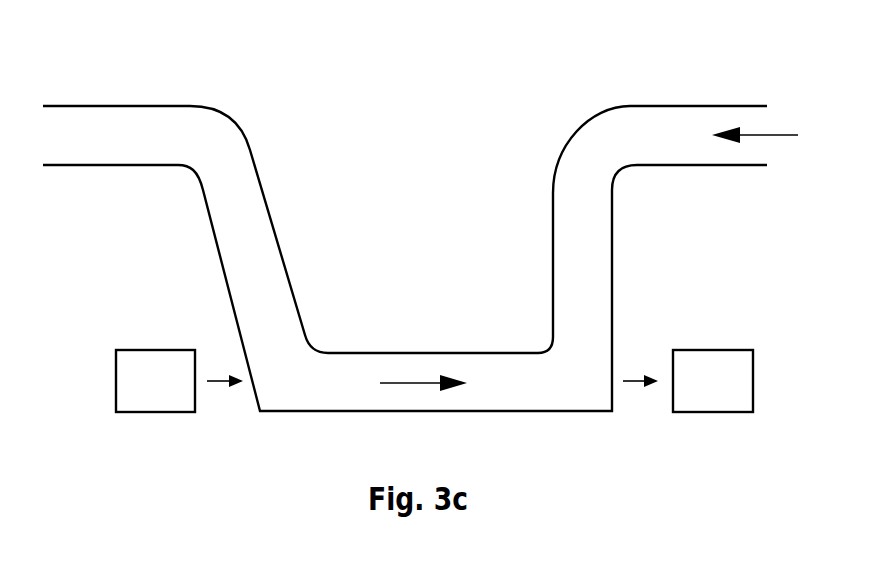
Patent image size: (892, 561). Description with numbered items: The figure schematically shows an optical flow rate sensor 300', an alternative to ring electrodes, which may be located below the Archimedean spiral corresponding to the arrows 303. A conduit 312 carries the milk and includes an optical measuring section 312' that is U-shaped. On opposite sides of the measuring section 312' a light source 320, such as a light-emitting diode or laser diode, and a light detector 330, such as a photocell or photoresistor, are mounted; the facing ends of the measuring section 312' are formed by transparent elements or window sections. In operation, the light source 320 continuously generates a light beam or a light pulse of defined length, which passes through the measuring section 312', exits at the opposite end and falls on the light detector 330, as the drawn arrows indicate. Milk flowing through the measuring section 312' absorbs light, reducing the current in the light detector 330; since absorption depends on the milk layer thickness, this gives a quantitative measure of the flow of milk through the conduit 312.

The optical flow rate sensor 300' is at (405, 213).
The optical measuring section 312' is at (241, 242).
The conduit 312 is at (603, 227).
The arrows 303 is at (777, 134).
The light source 320 is at (178, 393).
The light detector 330 is at (735, 395).